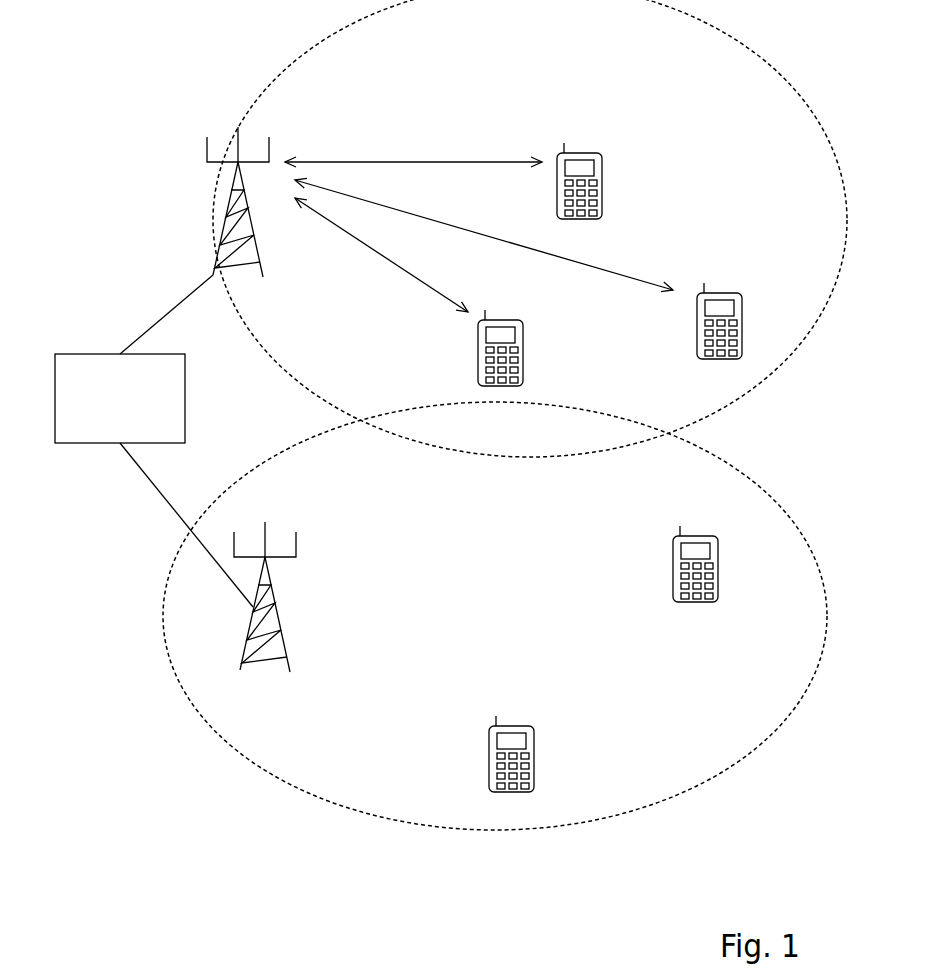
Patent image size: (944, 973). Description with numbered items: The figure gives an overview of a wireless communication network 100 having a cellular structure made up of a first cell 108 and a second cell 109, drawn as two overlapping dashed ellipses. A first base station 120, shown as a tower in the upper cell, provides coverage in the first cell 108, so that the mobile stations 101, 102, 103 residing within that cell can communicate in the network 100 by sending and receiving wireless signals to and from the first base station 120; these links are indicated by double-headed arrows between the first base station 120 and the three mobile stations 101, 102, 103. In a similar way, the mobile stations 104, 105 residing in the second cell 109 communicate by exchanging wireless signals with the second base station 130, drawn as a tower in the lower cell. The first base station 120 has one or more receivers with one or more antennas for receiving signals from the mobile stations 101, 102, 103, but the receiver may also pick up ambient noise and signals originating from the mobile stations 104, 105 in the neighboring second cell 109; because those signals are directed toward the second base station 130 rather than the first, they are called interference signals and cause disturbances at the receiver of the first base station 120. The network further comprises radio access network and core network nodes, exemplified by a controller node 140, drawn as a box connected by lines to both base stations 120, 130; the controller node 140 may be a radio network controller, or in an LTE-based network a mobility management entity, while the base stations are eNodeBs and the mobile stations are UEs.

The wireless communication network 100 is at (346, 88).
The mobile station 101 is at (602, 186).
The mobile station 102 is at (523, 355).
The mobile station 103 is at (742, 333).
The mobile station 104 is at (718, 577).
The mobile station 105 is at (534, 758).
The first cell 108 is at (755, 387).
The second cell 109 is at (752, 751).
The first base station 120 is at (220, 247).
The second base station 130 is at (250, 645).
The controller node 140 is at (140, 408).